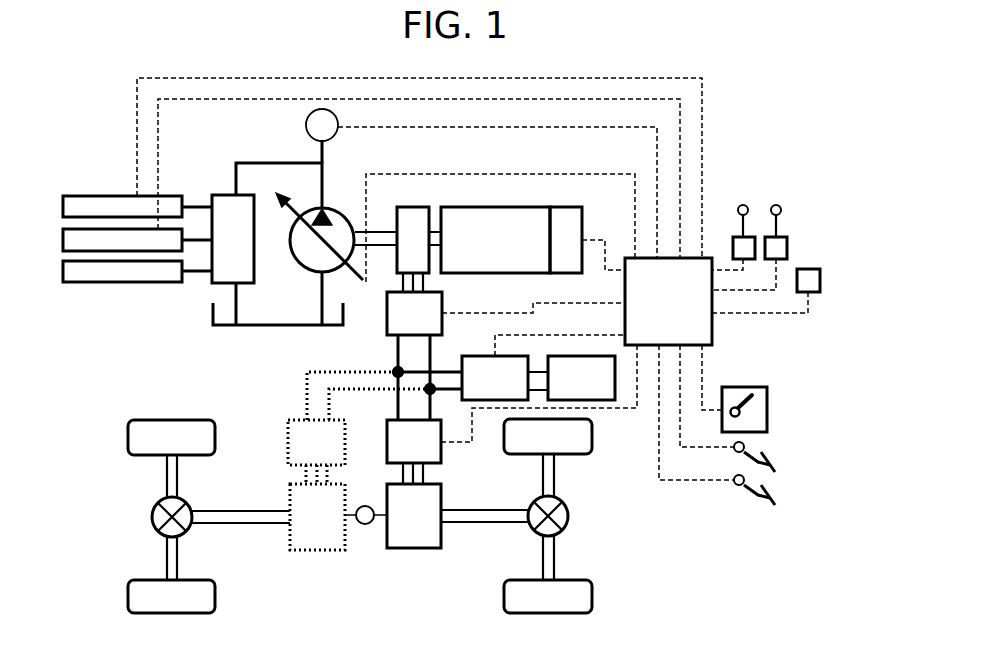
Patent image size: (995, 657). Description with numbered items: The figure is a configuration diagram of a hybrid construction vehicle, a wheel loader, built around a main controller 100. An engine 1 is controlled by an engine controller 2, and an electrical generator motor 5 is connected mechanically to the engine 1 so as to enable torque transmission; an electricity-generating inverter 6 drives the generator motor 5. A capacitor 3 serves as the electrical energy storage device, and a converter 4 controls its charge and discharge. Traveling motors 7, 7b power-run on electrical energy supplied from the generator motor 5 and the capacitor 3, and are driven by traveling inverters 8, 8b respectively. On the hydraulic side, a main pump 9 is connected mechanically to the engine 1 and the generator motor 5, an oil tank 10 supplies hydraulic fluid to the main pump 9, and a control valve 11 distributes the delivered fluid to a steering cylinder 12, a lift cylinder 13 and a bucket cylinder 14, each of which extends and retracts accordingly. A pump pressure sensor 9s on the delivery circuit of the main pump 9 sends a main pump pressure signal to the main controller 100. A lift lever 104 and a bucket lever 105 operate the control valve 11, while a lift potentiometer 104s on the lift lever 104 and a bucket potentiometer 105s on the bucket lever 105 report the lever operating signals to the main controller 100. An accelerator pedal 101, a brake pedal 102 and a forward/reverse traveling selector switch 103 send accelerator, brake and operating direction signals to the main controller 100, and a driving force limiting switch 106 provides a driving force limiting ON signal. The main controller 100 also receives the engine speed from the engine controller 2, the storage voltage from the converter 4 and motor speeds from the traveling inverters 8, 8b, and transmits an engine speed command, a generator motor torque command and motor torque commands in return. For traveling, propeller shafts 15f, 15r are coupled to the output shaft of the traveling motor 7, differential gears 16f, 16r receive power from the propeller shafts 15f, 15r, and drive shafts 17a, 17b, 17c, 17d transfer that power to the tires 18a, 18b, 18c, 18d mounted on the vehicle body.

The engine 1 is at (495, 240).
The engine controller 2 is at (583, 220).
The capacitor 3 is at (581, 378).
The converter 4 is at (543, 367).
The electrical generator motor 5 is at (419, 207).
The electricity-generating inverter 6 is at (506, 356).
The traveling motor 7 is at (393, 516).
The traveling motor 7b is at (317, 517).
The traveling inverter 8 is at (512, 414).
The traveling inverter 8b is at (359, 428).
The main pump 9 is at (312, 272).
The pump pressure sensor 9s is at (306, 126).
The oil tank 10 is at (291, 326).
The control valve 11 is at (218, 239).
The steering cylinder 12 is at (122, 207).
The lift cylinder 13 is at (122, 241).
The bucket cylinder 14 is at (122, 272).
The propeller shaft 15f is at (268, 528).
The propeller shaft 15r is at (484, 528).
The differential gear 16f is at (152, 513).
The differential gear 16r is at (568, 512).
The drive shaft 17a is at (167, 562).
The drive shaft 17b is at (167, 482).
The drive shaft 17c is at (554, 560).
The drive shaft 17d is at (554, 482).
The tire 18a is at (171, 596).
The tire 18b is at (171, 437).
The tire 18c is at (548, 596).
The tire 18d is at (548, 436).
The main controller 100 is at (668, 301).
The accelerator pedal 101 is at (770, 460).
The brake pedal 102 is at (776, 494).
The forward/reverse traveling selector switch 103 is at (767, 412).
The lift lever 104 is at (746, 204).
The lift potentiometer 104s is at (733, 238).
The bucket lever 105 is at (780, 204).
The bucket potentiometer 105s is at (786, 237).
The driving force limiting switch 106 is at (808, 269).